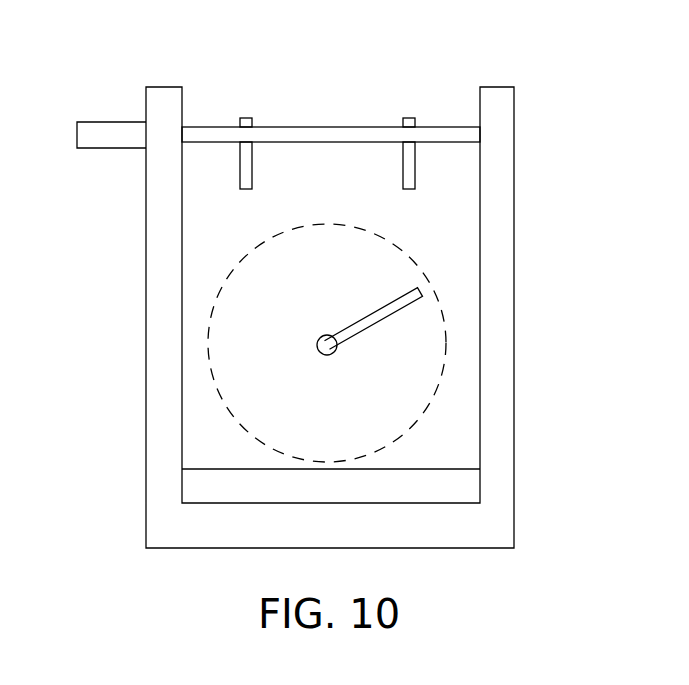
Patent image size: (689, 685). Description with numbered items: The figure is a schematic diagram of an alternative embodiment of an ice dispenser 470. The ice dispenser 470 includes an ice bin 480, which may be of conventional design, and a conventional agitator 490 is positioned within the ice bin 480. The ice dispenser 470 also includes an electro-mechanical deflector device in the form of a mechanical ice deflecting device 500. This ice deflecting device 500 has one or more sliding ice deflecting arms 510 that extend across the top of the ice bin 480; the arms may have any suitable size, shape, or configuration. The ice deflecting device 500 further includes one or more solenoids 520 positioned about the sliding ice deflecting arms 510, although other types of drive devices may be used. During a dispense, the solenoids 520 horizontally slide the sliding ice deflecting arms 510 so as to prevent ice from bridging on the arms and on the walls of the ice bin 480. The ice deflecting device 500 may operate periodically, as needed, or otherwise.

The ice dispenser 470 is at (80, 44).
The ice bin 480 is at (514, 138).
The agitator 490 is at (375, 325).
The mechanical ice deflecting device 500 is at (108, 118).
The sliding ice deflecting arms 510 is at (252, 170).
The solenoids 520 is at (106, 149).